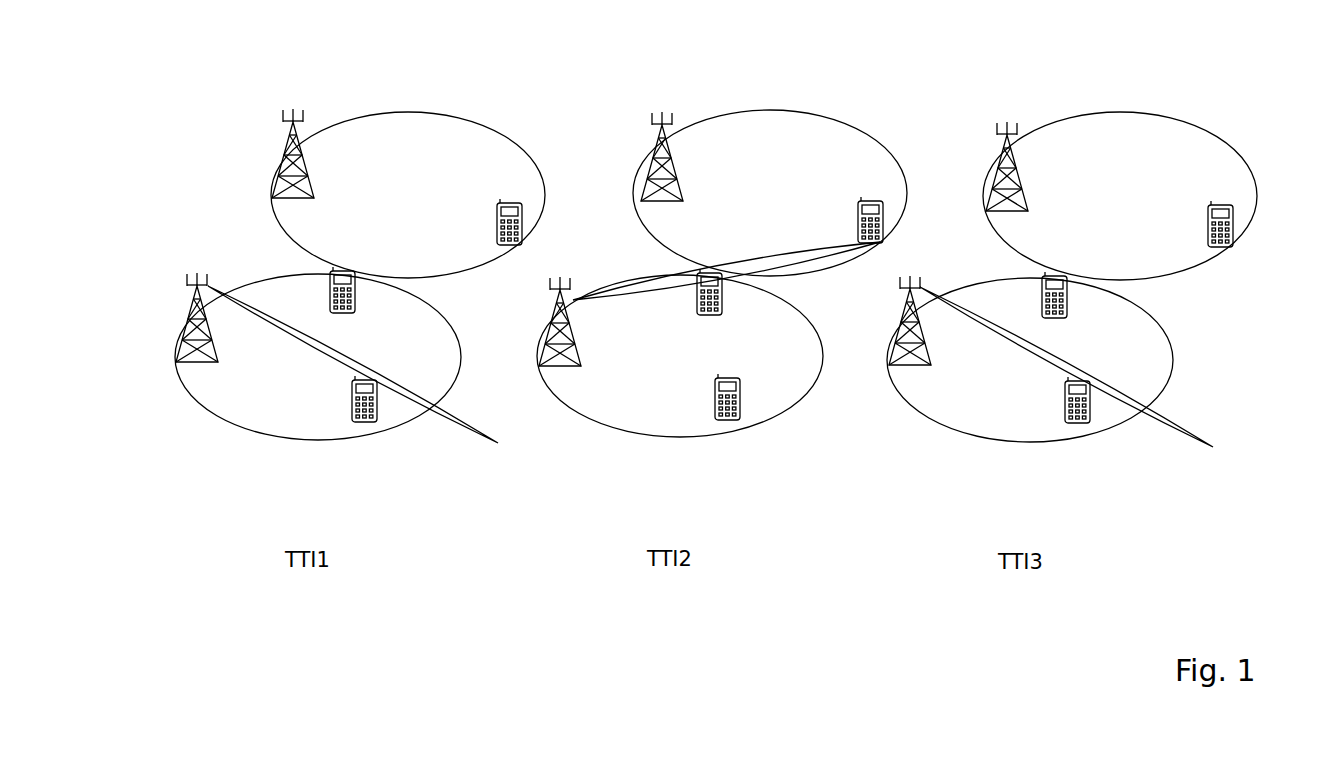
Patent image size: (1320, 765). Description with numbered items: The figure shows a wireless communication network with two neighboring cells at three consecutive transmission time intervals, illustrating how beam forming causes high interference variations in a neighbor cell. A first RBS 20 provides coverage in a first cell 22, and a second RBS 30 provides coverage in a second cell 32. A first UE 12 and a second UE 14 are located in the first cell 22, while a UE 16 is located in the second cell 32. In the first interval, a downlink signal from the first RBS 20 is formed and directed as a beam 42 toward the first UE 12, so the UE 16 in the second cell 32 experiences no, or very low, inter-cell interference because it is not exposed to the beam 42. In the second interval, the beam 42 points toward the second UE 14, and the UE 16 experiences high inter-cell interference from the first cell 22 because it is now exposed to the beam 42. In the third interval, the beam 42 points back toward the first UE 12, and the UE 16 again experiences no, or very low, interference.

The first UE 12 is at (351, 412).
The second UE 14 is at (355, 297).
The UE 16 is at (522, 215).
The first RBS 20 is at (185, 332).
The first cell 22 is at (281, 440).
The second RBS 30 is at (282, 165).
The second cell 32 is at (461, 113).
The beam 42 is at (460, 428).